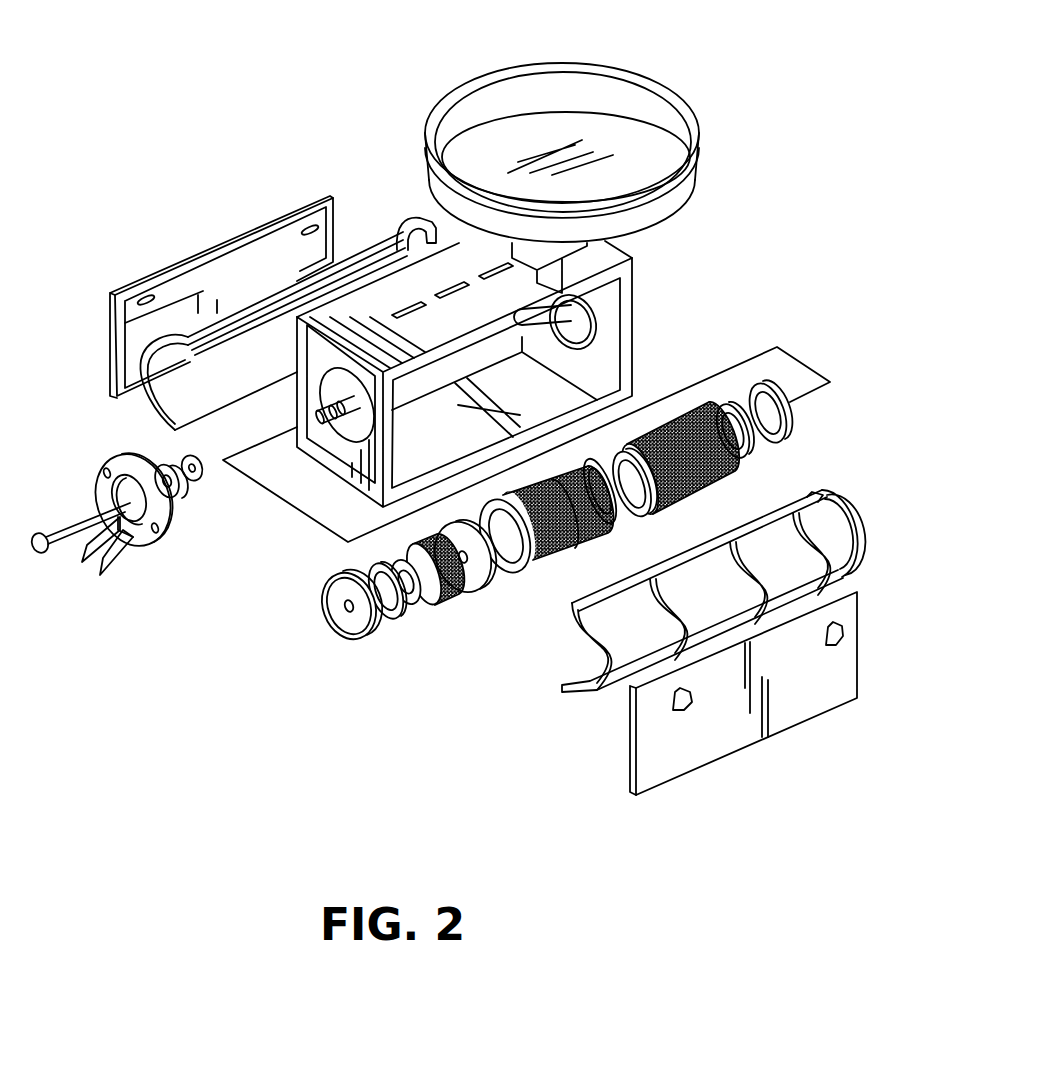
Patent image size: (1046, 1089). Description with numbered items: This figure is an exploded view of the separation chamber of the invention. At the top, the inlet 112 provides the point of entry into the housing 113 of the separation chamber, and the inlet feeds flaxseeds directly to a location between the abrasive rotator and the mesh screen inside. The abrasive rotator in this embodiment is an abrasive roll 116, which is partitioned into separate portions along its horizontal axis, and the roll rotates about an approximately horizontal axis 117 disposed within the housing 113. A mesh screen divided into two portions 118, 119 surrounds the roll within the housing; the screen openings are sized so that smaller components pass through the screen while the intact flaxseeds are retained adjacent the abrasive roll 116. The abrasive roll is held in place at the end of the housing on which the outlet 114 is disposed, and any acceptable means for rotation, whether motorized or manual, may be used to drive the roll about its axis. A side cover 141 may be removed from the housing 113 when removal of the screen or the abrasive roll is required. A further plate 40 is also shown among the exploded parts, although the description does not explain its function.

The cover plate 40 is at (253, 230).
The inlet 112 is at (558, 62).
The housing 113 is at (637, 300).
The outlet 114 is at (115, 563).
The abrasive roll 116 is at (577, 550).
The horizontal axis 117 is at (330, 412).
The mesh screen portion 118 is at (386, 240).
The mesh screen portion 119 is at (573, 622).
The side cover 141 is at (630, 768).